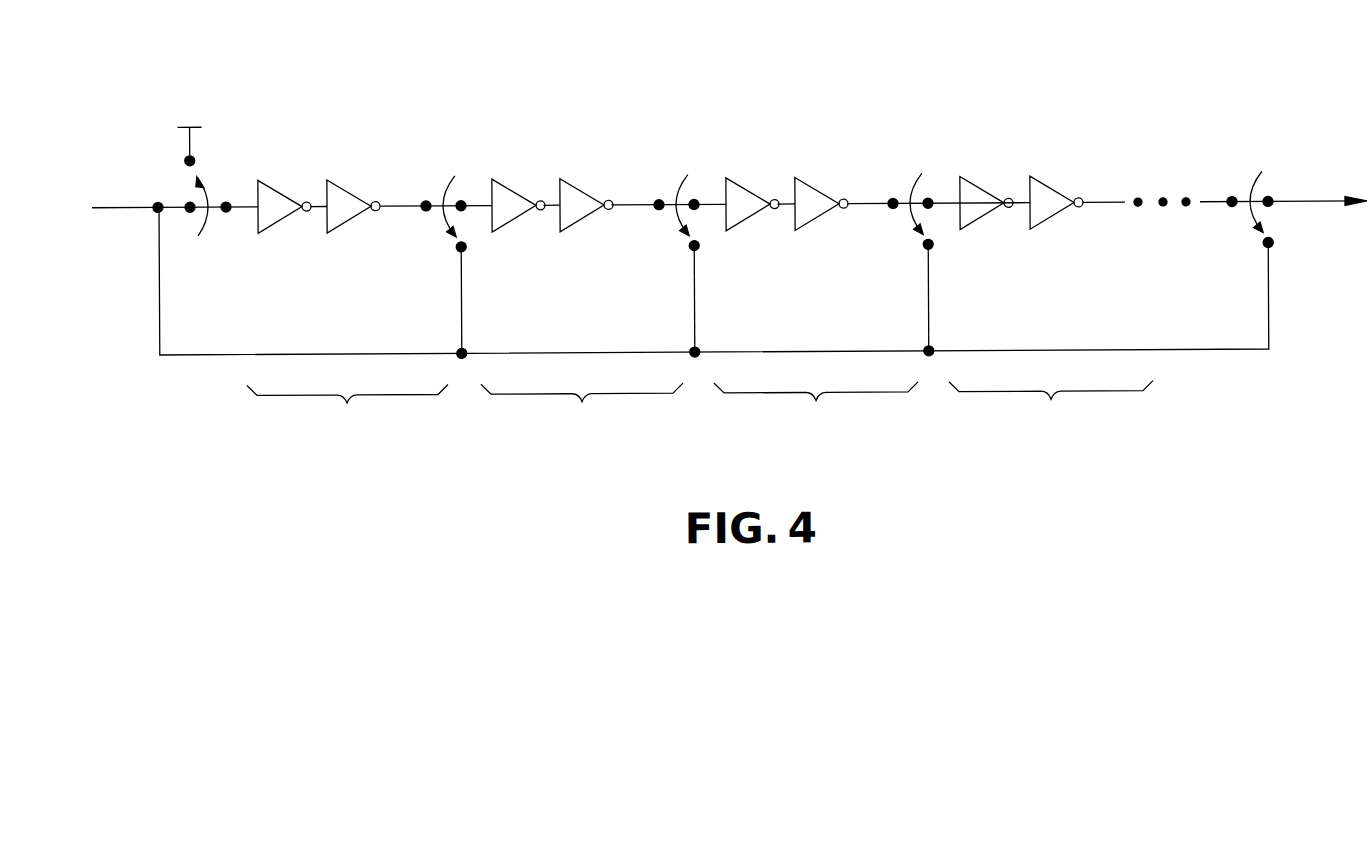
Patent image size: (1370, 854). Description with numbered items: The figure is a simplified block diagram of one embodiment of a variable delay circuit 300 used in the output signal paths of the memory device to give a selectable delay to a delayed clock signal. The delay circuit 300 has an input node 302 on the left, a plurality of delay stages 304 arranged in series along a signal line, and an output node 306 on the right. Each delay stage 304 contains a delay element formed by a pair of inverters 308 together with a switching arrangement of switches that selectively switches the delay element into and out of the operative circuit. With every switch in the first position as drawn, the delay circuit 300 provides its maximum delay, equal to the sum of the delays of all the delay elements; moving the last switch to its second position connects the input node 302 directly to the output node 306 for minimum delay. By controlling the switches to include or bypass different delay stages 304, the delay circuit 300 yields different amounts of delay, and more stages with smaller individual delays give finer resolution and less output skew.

The variable delay circuit 300 is at (1139, 83).
The input node 302 is at (118, 209).
The delay stage 304 is at (346, 404).
The output node 306 is at (1318, 209).
The inverter 308 is at (352, 196).